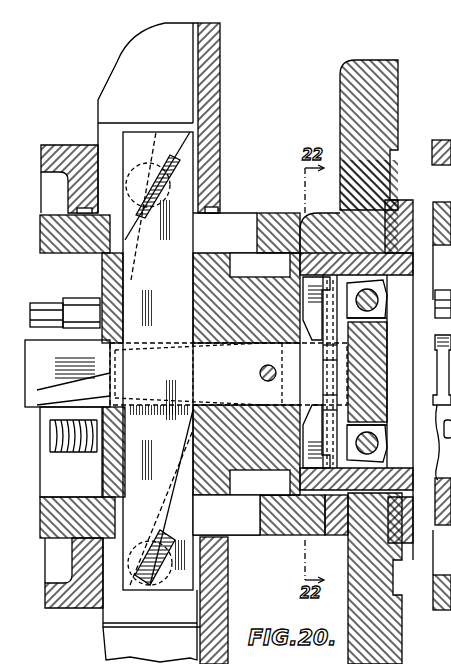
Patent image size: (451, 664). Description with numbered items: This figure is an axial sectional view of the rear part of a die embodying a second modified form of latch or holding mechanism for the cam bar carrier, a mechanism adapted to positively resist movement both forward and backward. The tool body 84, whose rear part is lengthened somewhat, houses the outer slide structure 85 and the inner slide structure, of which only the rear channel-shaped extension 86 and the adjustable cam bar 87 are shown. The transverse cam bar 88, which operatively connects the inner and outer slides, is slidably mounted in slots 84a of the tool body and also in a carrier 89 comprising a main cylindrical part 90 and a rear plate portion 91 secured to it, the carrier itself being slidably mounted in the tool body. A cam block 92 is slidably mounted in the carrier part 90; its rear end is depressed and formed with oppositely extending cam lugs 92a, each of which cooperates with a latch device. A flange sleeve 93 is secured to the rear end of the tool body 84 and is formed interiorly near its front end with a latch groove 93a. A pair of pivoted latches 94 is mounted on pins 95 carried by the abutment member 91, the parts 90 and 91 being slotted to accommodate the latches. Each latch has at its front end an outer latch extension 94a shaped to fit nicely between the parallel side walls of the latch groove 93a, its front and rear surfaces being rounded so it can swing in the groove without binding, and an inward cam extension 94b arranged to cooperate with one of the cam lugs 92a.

The tool body 84 is at (390, 92).
The slots 84a is at (232, 213).
The outer slide structure 85 is at (88, 135).
The rear channel-shaped extension 86 is at (45, 342).
The adjustable cam bar 87 is at (70, 355).
The transverse cam bar 88 is at (138, 140).
The carrier 89 is at (98, 460).
The main cylindrical part 90 is at (217, 483).
The rear plate portion 91 is at (385, 362).
The cam block 92 is at (160, 356).
The cam lugs 92a is at (303, 332).
The flange sleeve 93 is at (413, 252).
The latch groove 93a is at (322, 213).
The pivoted latches 94 is at (385, 284).
The outer latch extension 94a is at (300, 213).
The inward cam extension 94b is at (300, 314).
The pins 95 is at (386, 318).